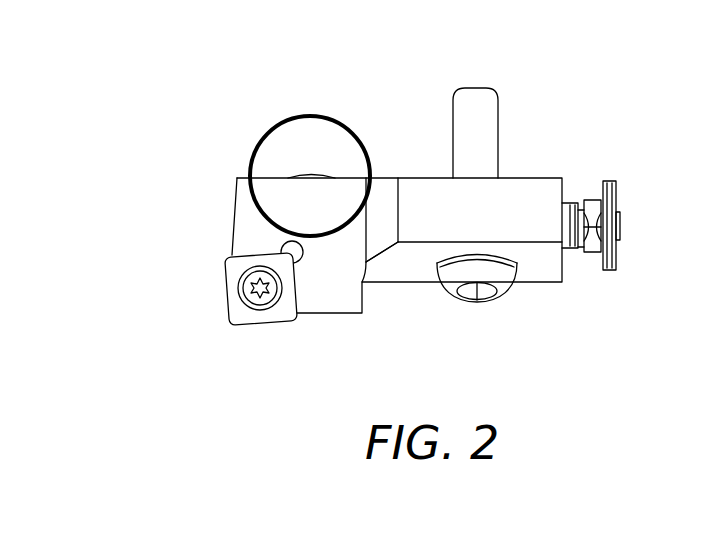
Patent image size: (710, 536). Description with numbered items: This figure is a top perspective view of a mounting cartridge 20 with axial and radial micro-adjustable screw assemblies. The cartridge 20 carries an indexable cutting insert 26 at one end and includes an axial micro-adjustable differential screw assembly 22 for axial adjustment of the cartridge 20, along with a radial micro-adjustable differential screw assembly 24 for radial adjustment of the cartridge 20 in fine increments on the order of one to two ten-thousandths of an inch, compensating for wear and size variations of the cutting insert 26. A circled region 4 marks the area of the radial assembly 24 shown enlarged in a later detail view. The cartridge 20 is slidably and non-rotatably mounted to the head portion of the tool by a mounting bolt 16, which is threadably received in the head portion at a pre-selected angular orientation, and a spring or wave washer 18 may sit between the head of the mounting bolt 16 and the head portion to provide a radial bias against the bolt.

The detail circle (region shown in FIG. 4) 4 is at (258, 142).
The mounting bolt 16 is at (498, 282).
The spring or wave washer 18 is at (433, 267).
The cartridge 20 is at (542, 148).
The axial micro-adjustable differential screw assembly 22 is at (637, 258).
The radial micro-adjustable differential screw assembly 24 is at (323, 150).
The indexable cutting insert 26 is at (213, 305).